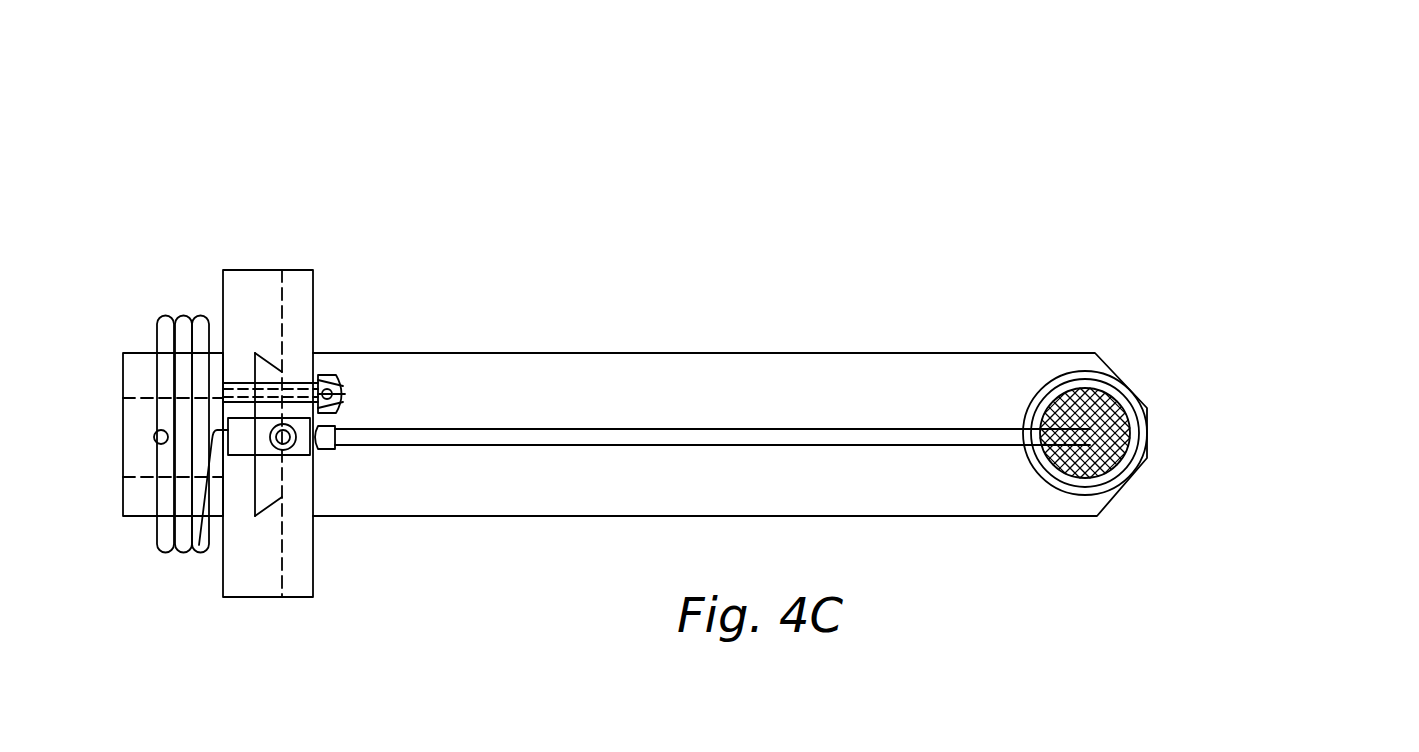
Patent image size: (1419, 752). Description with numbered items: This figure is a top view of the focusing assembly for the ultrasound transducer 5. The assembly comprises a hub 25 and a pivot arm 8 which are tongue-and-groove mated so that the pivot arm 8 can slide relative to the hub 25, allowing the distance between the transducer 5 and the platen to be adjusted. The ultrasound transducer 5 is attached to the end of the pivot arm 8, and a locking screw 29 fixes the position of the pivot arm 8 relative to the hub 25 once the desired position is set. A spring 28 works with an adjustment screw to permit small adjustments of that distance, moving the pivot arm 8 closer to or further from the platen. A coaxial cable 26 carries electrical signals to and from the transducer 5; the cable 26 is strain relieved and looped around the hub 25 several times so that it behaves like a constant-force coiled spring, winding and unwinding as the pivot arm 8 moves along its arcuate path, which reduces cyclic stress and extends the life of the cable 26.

The pivot arm 8 is at (730, 283).
The hub 25 is at (406, 357).
The ultrasound transducer 5 is at (1229, 350).
The spring 28 is at (322, 372).
The locking screw 29 is at (350, 385).
The coaxial cable 26 is at (170, 550).